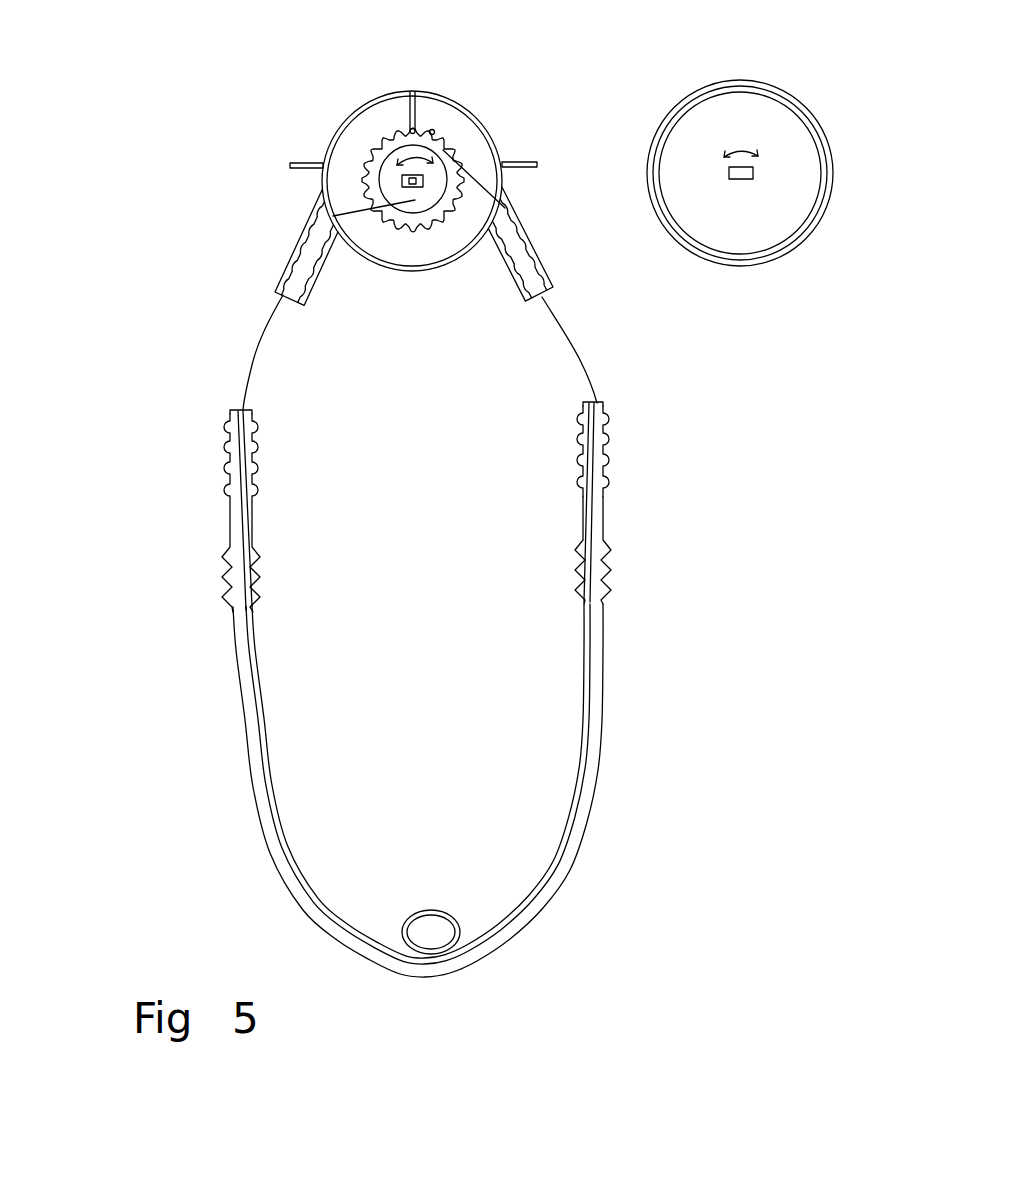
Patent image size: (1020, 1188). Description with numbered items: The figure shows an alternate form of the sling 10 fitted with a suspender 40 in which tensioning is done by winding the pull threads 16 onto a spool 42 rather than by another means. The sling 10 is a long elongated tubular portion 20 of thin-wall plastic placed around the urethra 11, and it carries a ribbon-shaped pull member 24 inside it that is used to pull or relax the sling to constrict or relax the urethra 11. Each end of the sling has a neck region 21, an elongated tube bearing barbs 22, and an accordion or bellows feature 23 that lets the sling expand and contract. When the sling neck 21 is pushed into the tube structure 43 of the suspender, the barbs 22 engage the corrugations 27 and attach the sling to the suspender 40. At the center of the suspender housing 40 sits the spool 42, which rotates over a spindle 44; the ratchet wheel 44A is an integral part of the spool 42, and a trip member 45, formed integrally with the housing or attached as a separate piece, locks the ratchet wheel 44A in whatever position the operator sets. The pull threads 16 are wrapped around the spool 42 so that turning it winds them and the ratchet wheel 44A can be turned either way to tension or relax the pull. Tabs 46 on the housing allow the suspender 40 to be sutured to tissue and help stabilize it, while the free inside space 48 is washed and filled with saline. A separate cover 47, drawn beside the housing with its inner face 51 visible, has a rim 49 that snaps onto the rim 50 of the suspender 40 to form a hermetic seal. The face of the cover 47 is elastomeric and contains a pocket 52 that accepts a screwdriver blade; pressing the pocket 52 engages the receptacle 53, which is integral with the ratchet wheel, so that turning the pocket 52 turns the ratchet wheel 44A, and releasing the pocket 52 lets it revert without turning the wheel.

The sling 10 is at (243, 408).
The urethra 11 is at (437, 920).
The pull threads 16 is at (580, 360).
The tubular portion 20 is at (590, 767).
The neck region 21 is at (607, 427).
The barbs 22 is at (607, 463).
The accordion or bellows feature 23 is at (610, 557).
The pull member 24 is at (533, 906).
The corrugations 27 is at (538, 247).
The suspender 40 is at (453, 258).
The spool 42 is at (421, 198).
The tube structure 43 is at (512, 190).
The spindle 44 is at (446, 152).
The ratchet wheel 44A is at (434, 132).
The trip member 45 is at (415, 128).
The tabs 46 is at (290, 165).
The cover 47 is at (738, 253).
The space 48 is at (372, 232).
The rim 49 is at (822, 196).
The rim 50 is at (363, 105).
The cap inner ring 51 is at (773, 210).
The pocket 52 is at (750, 170).
The receptacle 53 is at (403, 182).